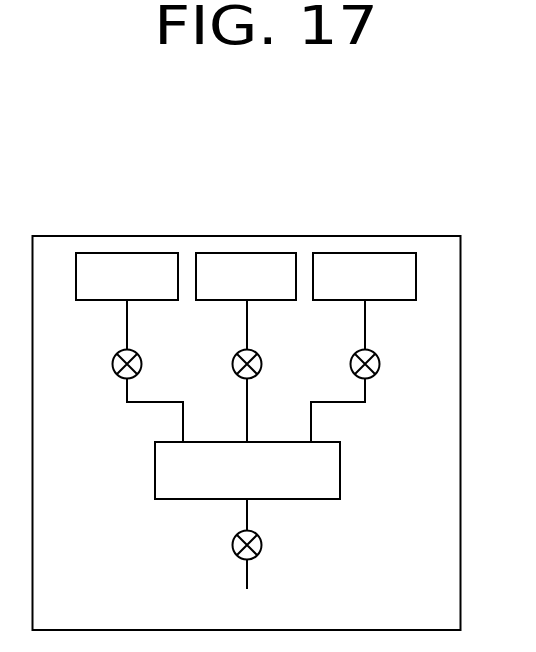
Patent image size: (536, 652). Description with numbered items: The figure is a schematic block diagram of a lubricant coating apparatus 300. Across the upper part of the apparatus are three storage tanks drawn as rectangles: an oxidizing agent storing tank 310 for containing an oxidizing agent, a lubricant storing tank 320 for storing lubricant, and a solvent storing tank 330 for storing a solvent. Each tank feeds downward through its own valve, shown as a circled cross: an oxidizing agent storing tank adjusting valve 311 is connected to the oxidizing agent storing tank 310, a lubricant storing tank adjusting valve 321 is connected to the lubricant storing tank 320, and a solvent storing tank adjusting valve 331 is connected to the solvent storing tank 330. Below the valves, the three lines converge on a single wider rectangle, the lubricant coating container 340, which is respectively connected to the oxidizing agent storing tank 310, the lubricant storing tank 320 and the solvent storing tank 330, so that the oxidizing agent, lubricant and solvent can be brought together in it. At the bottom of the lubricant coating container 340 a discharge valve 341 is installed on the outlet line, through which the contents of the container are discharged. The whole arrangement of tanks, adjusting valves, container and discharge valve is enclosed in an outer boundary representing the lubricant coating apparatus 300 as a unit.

The lubricant coating apparatus 300 is at (276, 135).
The oxidizing agent storing tank 310 is at (123, 253).
The lubricant storing tank 320 is at (246, 253).
The solvent storing tank 330 is at (364, 253).
The oxidizing agent storing tank adjusting valve 311 is at (112, 364).
The lubricant storing tank adjusting valve 321 is at (232, 364).
The solvent storing tank adjusting valve 331 is at (350, 364).
The lubricant coating container 340 is at (155, 469).
The discharge valve 341 is at (232, 545).